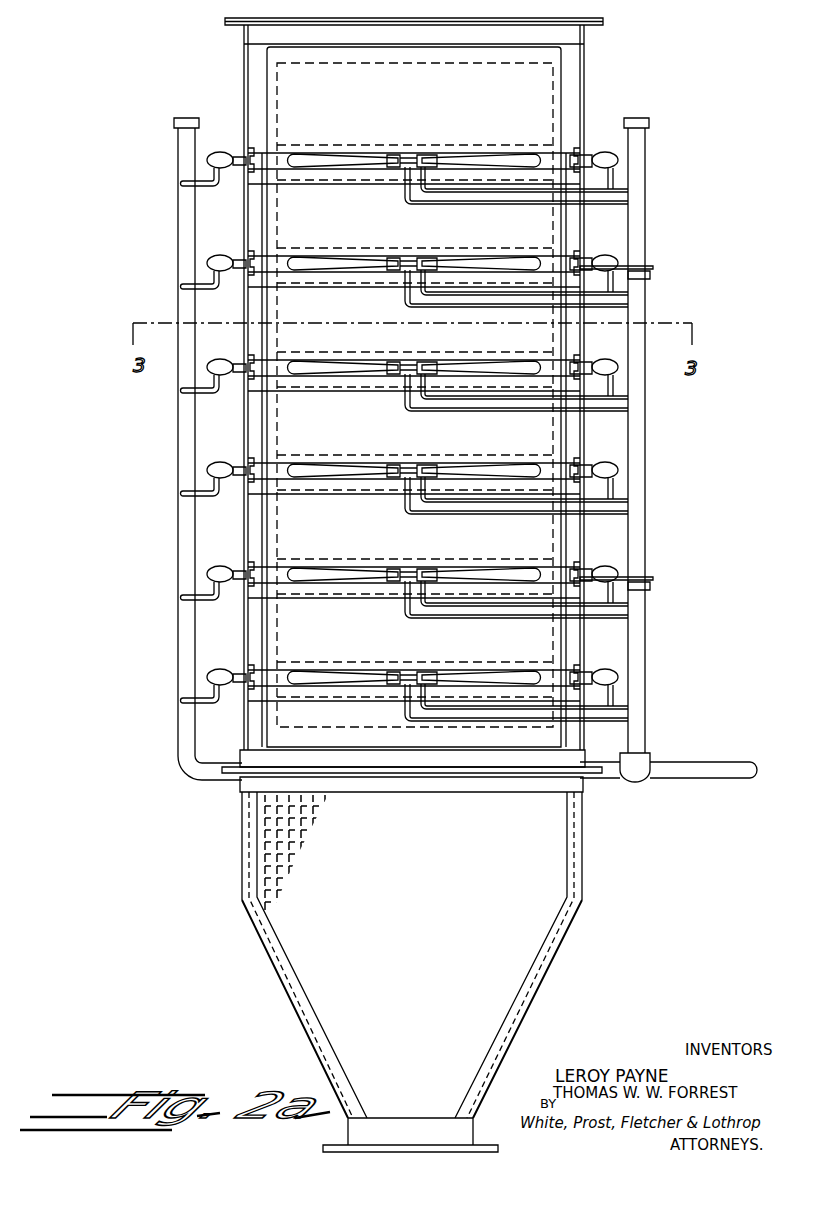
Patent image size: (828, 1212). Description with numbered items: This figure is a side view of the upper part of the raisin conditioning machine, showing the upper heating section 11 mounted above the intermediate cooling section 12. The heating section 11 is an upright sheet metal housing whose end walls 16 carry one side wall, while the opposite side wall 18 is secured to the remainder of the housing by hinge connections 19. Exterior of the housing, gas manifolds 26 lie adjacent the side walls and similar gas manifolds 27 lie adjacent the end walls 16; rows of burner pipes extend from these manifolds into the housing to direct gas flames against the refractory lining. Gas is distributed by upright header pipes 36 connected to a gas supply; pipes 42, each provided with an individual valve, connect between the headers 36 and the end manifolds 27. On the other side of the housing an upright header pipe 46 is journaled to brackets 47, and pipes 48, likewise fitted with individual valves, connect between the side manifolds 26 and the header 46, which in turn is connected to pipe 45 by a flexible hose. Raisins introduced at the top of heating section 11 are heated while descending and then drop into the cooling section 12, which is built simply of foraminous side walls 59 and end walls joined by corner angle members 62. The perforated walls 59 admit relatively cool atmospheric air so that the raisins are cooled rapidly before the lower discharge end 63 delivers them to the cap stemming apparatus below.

The upper heating section 11 is at (462, 405).
The intermediate cooling section 12 is at (453, 987).
The end walls 16 is at (244, 68).
The side wall 18 is at (268, 718).
The hinge connections 19 is at (589, 156).
The gas manifolds 26 is at (330, 165).
The gas manifolds 27 is at (225, 253).
The upright header pipes 36 is at (178, 448).
The pipes 42 is at (207, 180).
The pipe 45 is at (705, 770).
The upright header pipe 46 is at (640, 636).
The brackets 47 is at (653, 268).
The pipes 48 is at (437, 202).
The foraminous side walls 59 is at (555, 830).
The corner angle members 62 is at (568, 917).
The lower discharge end 63 is at (376, 1152).